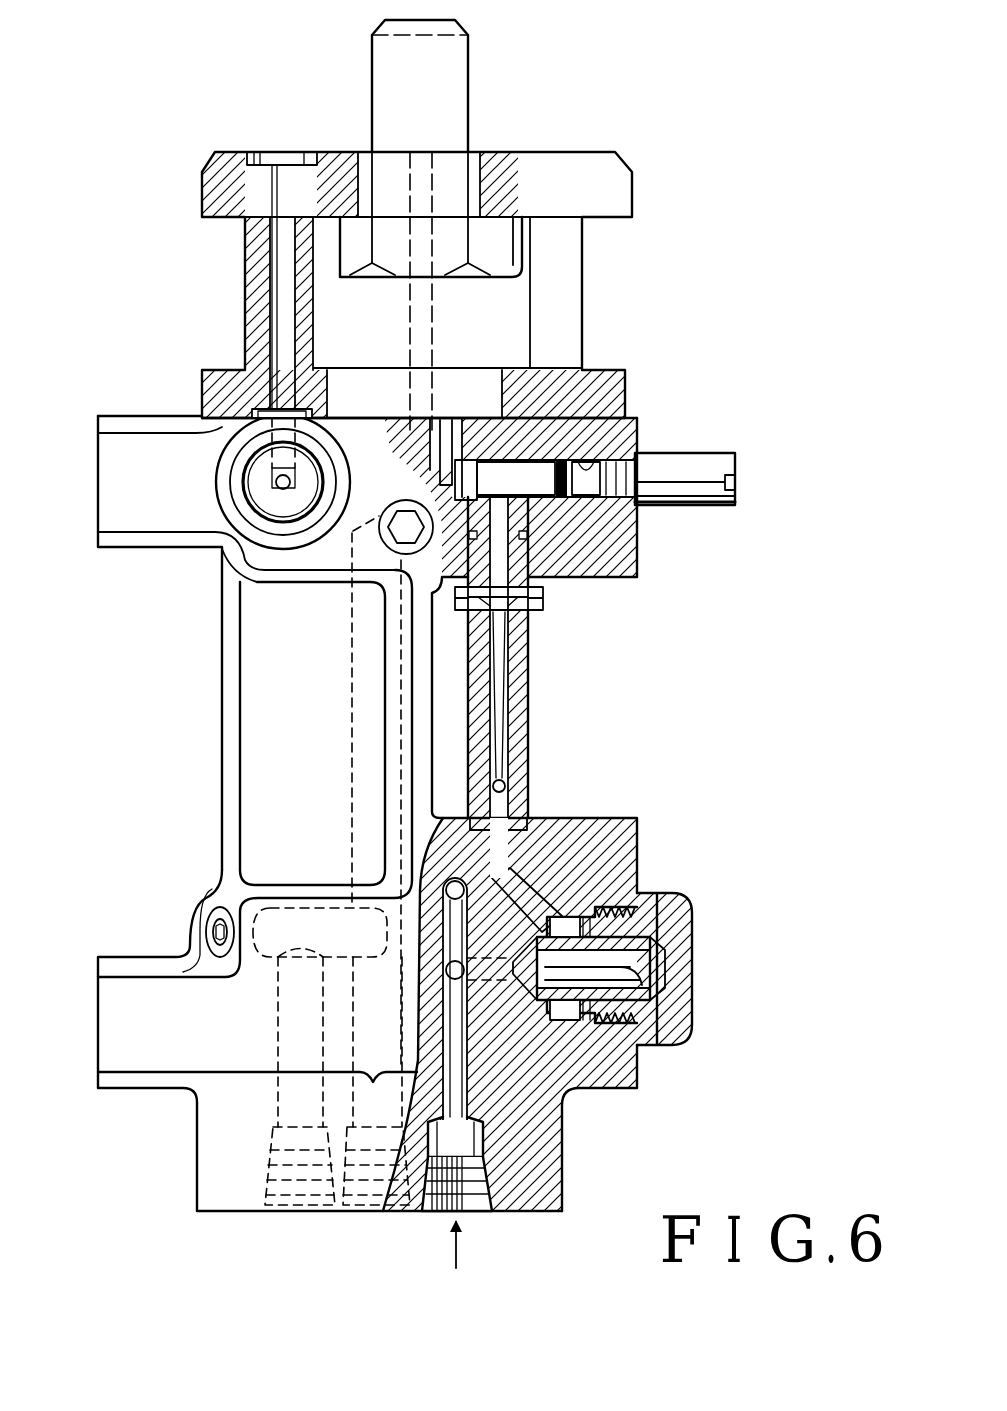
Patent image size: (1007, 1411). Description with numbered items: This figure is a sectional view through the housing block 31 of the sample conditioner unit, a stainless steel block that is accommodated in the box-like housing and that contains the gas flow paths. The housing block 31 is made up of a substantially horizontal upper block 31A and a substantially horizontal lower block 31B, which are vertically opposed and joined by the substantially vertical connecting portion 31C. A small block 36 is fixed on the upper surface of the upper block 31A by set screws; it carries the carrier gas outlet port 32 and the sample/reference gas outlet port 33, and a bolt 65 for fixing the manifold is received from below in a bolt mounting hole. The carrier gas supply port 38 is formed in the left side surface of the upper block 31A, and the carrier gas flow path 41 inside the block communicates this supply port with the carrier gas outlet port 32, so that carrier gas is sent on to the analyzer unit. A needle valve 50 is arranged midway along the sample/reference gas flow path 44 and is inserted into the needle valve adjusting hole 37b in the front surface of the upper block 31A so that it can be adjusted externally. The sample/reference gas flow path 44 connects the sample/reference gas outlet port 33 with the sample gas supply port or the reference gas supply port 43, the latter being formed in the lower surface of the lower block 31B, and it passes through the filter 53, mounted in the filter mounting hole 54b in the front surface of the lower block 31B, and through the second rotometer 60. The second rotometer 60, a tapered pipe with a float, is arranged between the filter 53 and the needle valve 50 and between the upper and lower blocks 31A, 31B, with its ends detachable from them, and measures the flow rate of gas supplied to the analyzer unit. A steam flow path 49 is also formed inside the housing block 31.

The housing block 31 is at (190, 862).
The upper block 31A is at (637, 545).
The lower block 31B is at (630, 818).
The connecting portion 31C is at (226, 740).
The carrier gas outlet port 32 is at (287, 158).
The sample/reference gas outlet port 33 is at (425, 160).
The small block 36 is at (630, 172).
The needle valve adjusting hole 37b is at (627, 428).
The carrier gas supply port 38 is at (284, 486).
The carrier gas flow path 41 is at (290, 312).
The reference gas supply port 43 is at (437, 1213).
The sample/reference gas flow path 44 is at (418, 306).
The steam flow path 49 is at (352, 680).
The needle valve 50 is at (638, 473).
The filter 53 is at (650, 969).
The filter mounting hole 54b is at (580, 870).
The second rotometer 60 is at (529, 658).
The bolt 65 is at (470, 35).